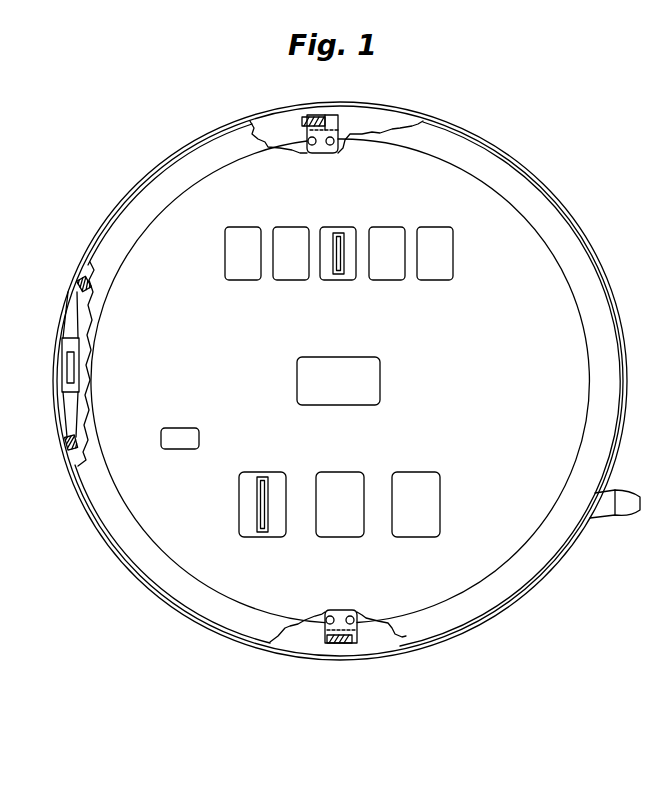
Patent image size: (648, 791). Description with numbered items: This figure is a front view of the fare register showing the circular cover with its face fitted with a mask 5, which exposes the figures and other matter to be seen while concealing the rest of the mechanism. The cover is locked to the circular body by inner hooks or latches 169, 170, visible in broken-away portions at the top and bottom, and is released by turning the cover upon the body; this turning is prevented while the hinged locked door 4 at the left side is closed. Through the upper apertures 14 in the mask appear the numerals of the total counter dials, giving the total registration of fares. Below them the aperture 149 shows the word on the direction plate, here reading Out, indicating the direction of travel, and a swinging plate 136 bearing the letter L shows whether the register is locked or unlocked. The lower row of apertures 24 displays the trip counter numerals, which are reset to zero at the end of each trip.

The locked door 4 is at (57, 422).
The mask 5 is at (542, 252).
The apertures 14 is at (338, 278).
The roll 24 is at (403, 530).
The swinging plate 136 is at (172, 450).
The aperture 149 is at (375, 393).
The inner hook or latch 169 is at (307, 118).
The inner hook or latch 170 is at (337, 130).